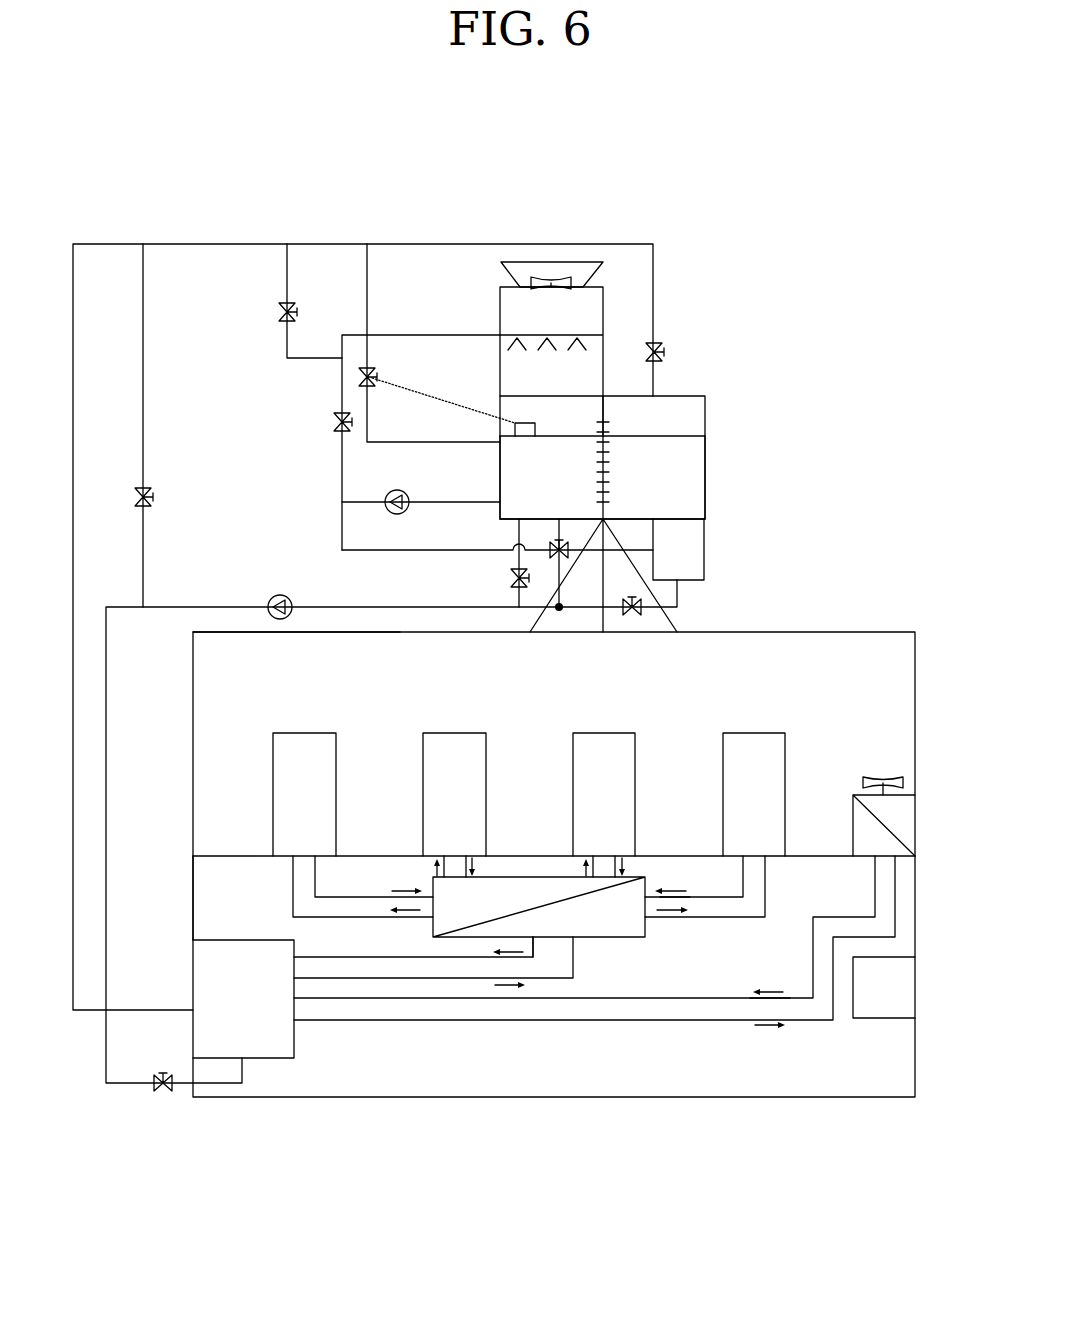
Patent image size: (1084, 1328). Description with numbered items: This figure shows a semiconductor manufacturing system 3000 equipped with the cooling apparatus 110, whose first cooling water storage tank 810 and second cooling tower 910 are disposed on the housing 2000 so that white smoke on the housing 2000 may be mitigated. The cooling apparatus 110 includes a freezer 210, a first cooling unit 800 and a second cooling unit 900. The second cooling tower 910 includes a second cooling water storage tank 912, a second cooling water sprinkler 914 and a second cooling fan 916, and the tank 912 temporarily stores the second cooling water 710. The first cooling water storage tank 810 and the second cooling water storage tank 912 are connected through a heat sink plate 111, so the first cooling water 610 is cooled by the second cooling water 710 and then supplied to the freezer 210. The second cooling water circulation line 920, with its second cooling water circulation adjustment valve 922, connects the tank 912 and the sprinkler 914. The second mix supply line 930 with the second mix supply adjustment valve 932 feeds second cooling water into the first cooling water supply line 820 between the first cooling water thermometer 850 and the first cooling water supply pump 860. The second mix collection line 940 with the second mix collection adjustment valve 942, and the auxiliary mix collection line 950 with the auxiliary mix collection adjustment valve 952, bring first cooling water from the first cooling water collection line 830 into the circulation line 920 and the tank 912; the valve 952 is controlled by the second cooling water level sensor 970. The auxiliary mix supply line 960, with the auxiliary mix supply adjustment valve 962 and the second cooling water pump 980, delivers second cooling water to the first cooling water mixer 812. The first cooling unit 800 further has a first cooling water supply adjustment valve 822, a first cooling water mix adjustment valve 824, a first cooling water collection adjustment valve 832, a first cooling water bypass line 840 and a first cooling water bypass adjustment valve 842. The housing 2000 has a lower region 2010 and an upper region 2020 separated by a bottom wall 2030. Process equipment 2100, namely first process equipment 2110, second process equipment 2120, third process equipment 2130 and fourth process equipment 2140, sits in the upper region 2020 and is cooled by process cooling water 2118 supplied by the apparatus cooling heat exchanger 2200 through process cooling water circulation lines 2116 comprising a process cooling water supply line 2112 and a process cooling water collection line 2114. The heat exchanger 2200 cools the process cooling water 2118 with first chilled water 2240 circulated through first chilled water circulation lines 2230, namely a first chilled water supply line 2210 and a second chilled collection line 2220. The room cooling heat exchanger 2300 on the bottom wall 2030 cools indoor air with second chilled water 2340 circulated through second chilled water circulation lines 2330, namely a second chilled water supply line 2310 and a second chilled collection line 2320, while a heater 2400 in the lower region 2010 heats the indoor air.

The semiconductor manufacturing system 3000 is at (935, 139).
The second cooling unit 900 is at (397, 196).
The cooling apparatus 110 is at (692, 196).
The second cooling tower 910 is at (660, 168).
The second cooling fan 916 is at (540, 283).
The second cooling water sprinkler 914 is at (557, 335).
The second cooling water storage tank 912 is at (586, 412).
The second mix collection line 940 is at (287, 273).
The second mix collection adjustment valve 942 is at (278, 312).
The auxiliary mix collection line 950 is at (368, 276).
The first cooling water collection line 830 is at (655, 284).
The first cooling water collection adjustment valve 832 is at (665, 352).
The second cooling water circulation line 920 is at (342, 377).
The second cooling water circulation adjustment valve 922 is at (333, 420).
The auxiliary mix collection adjustment valve 952 is at (372, 390).
The second cooling water level sensor 970 is at (528, 422).
The first cooling water bypass line 840 is at (145, 452).
The first cooling water bypass adjustment valve 842 is at (155, 497).
The first cooling unit 800 is at (725, 470).
The heat sink plate 111 is at (610, 418).
The second cooling water 710 is at (532, 470).
The first cooling water 610 is at (636, 470).
The first cooling water storage tank 810 is at (705, 505).
The first cooling water mixer 812 is at (705, 568).
The second cooling water pump 980 is at (397, 490).
The auxiliary mix supply adjustment valve 962 is at (556, 540).
The second mix supply line 930 is at (518, 547).
The auxiliary mix supply line 960 is at (402, 552).
The second mix supply adjustment valve 932 is at (508, 578).
The first cooling water thermometer 850 is at (565, 608).
The first cooling water mix adjustment valve 824 is at (640, 614).
The first cooling water supply line 820 is at (228, 600).
The first cooling water supply pump 860 is at (283, 595).
The first cooling water supply adjustment valve 822 is at (165, 1092).
The housing 2000 is at (882, 1100).
The upper region 2020 is at (262, 667).
The lower region 2010 is at (262, 901).
The bottom wall 2030 is at (222, 853).
The process equipment 2100 is at (793, 678).
The first process equipment 2110 is at (304, 732).
The second process equipment 2120 is at (454, 732).
The third process equipment 2130 is at (604, 732).
The fourth process equipment 2140 is at (754, 732).
The room cooling heat exchanger 2300 is at (853, 815).
The process cooling water 2118 is at (672, 893).
The apparatus cooling heat exchanger 2200 is at (574, 929).
The process cooling water collection line 2114 is at (727, 897).
The process cooling water supply line 2112 is at (705, 920).
The process cooling water circulation lines 2116 is at (613, 1138).
The second chilled collection line 2220 is at (453, 957).
The first chilled water supply line 2210 is at (378, 978).
The first chilled water circulation lines 2230 is at (320, 1138).
The second chilled collection line 2320 is at (523, 998).
The second chilled water supply line 2310 is at (592, 1020).
The second chilled water circulation lines 2330 is at (470, 1138).
The first chilled water 2240 is at (515, 980).
The second chilled water 2340 is at (770, 992).
The heater 2400 is at (880, 1020).
The freezer 210 is at (270, 1060).